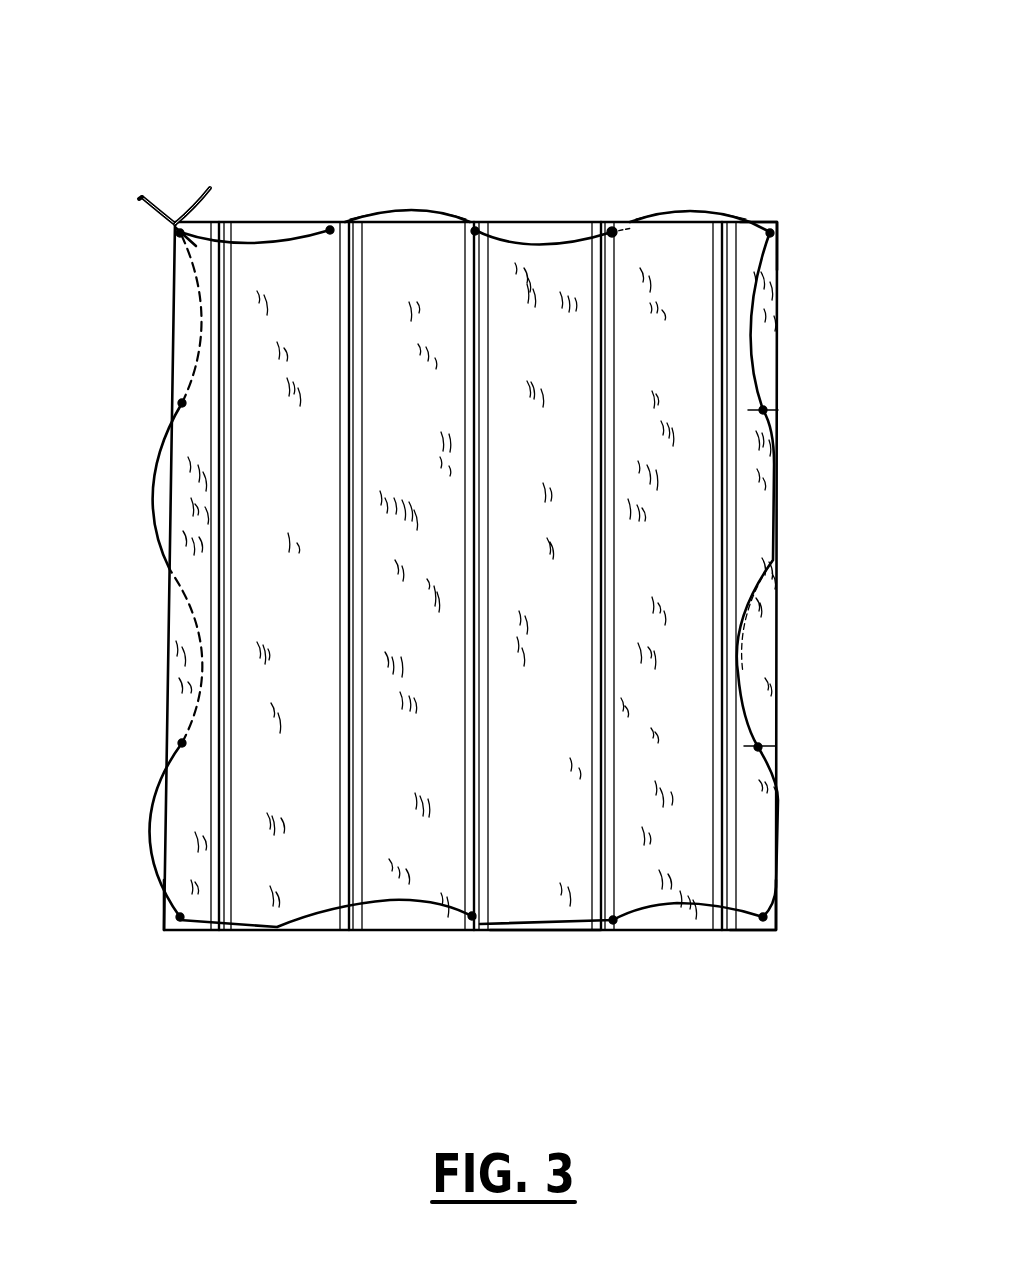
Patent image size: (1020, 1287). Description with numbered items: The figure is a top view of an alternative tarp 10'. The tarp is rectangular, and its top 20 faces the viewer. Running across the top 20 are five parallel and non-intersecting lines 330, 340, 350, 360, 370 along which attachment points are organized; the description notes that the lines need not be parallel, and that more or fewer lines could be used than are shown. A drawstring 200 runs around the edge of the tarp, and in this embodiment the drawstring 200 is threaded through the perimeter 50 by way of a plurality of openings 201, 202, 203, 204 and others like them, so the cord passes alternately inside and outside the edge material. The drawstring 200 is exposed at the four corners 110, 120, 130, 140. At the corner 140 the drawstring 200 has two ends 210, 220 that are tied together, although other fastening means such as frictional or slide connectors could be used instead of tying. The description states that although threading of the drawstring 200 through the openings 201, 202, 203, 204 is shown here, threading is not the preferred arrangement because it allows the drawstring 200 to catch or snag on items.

The alternative tarp 10' is at (470, 471).
The top 20 is at (380, 420).
The perimeter 50 is at (538, 933).
The corner 110 is at (779, 230).
The corner 120 is at (773, 933).
The corner 130 is at (162, 933).
The corner 140 is at (176, 222).
The drawstring 200 is at (415, 212).
The opening 201 is at (780, 238).
The opening 202 is at (775, 410).
The opening 203 is at (772, 747).
The opening 204 is at (610, 933).
The drawstring end 210 is at (211, 188).
The drawstring end 220 is at (142, 197).
The line of attachment points 330 is at (743, 223).
The line of attachment points 340 is at (610, 260).
The line of attachment points 350 is at (493, 247).
The line of attachment points 360 is at (350, 222).
The line of attachment points 370 is at (232, 450).